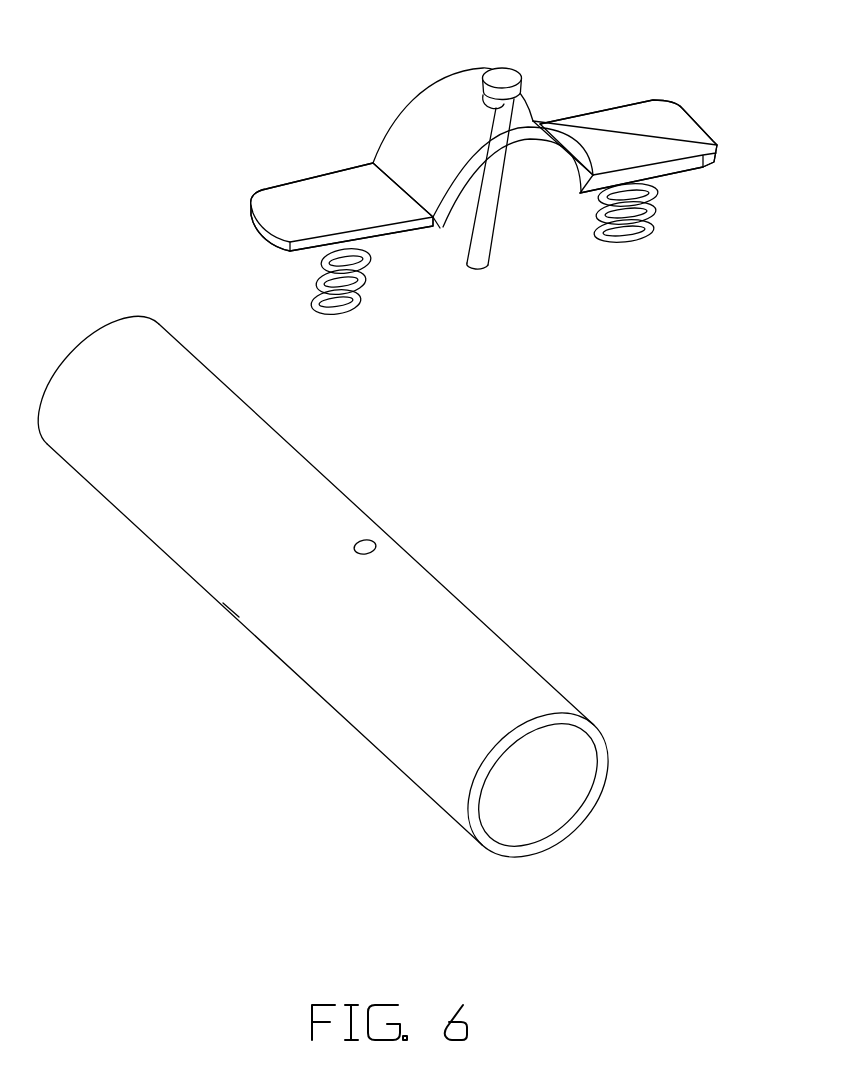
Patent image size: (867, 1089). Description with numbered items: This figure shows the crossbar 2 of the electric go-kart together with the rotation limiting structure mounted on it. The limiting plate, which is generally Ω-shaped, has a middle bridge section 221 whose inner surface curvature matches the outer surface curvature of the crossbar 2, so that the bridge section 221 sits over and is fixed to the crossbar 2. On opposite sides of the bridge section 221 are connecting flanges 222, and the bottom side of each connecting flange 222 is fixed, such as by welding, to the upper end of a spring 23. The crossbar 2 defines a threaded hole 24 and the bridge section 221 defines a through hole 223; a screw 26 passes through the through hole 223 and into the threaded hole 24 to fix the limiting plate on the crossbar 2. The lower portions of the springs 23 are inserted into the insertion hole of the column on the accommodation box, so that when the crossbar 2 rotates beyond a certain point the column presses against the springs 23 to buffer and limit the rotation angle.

The crossbar 2 is at (113, 475).
The threaded hole 24 is at (375, 547).
The spring 23 is at (650, 222).
The screw 26 is at (517, 95).
The bridge section 221 is at (717, 147).
The connecting flanges 222 is at (630, 117).
The through hole 223 is at (507, 104).